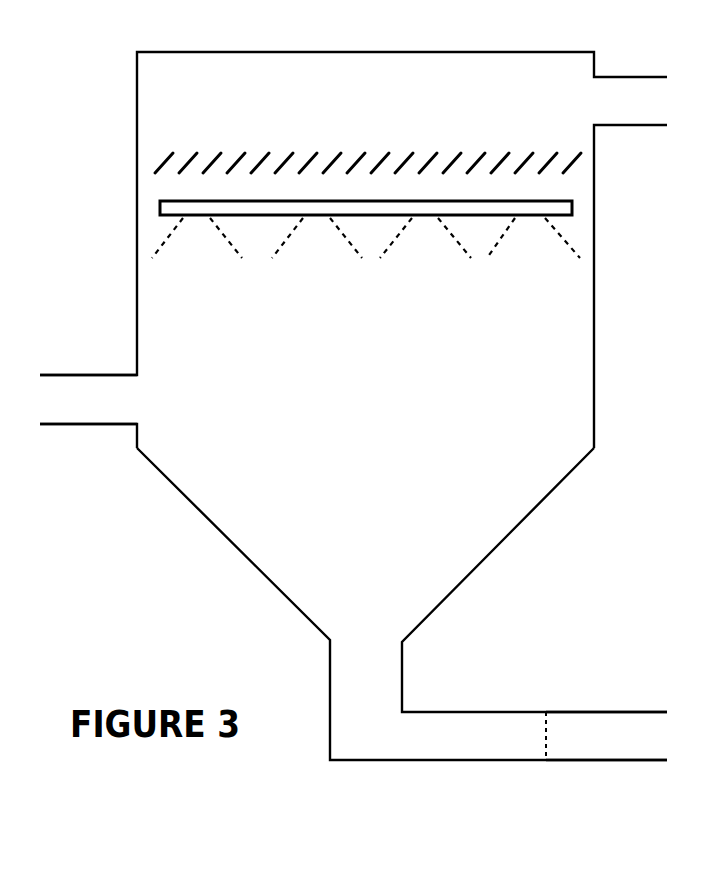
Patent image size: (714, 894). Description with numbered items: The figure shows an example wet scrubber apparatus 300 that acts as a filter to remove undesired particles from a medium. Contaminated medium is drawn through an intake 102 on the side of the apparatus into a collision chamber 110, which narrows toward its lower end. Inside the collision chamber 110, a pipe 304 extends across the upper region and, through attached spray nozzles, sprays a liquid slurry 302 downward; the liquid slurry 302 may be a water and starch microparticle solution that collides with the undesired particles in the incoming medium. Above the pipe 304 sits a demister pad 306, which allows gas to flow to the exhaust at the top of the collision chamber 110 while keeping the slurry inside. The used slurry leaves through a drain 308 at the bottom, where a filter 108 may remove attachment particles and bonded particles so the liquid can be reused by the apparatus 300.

The wet scrubber apparatus 300 is at (79, 50).
The intake 102 is at (57, 391).
The collision chamber 110 is at (502, 520).
The drain 308 is at (583, 724).
The filter 108 is at (535, 745).
The demister pad 306 is at (305, 147).
The pipe 304 is at (570, 200).
The liquid slurry 302 is at (305, 270).